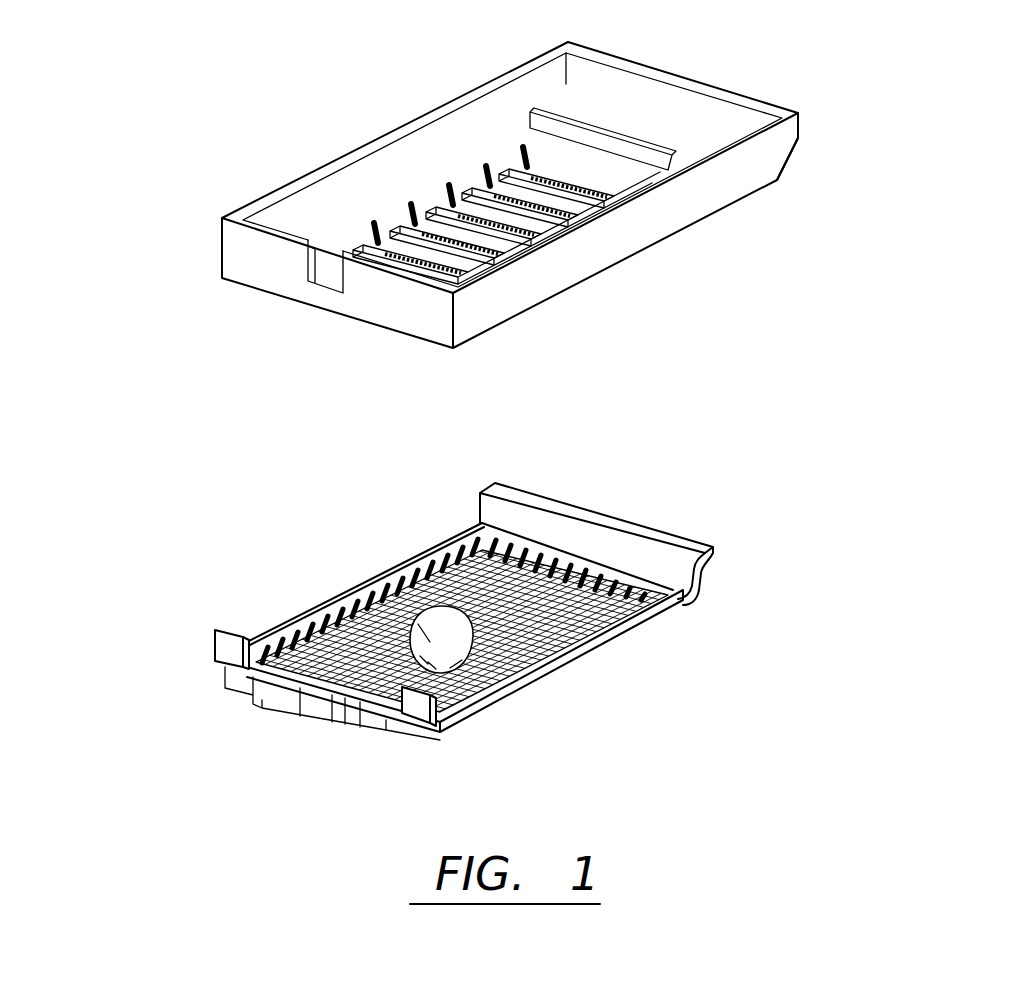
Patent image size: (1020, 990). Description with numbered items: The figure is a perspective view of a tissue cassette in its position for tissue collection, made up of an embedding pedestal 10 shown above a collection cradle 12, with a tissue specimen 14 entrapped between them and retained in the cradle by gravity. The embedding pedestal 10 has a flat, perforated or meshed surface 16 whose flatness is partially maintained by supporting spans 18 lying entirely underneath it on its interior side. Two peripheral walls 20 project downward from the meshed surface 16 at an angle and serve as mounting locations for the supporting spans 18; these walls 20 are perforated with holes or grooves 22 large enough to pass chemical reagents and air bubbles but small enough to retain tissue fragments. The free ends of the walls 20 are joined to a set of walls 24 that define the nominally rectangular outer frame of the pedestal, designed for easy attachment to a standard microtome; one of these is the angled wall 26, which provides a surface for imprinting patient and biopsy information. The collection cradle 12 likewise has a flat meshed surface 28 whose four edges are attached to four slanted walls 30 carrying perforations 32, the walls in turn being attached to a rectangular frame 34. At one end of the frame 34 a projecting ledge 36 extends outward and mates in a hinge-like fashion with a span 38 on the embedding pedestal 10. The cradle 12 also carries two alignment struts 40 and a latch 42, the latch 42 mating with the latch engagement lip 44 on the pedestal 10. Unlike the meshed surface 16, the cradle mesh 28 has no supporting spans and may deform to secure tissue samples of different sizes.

The embedding pedestal 10 is at (138, 27).
The collection cradle 12 is at (142, 440).
The tissue specimen 14 is at (432, 645).
The meshed surface 16 is at (558, 207).
The supporting spans 18 is at (500, 240).
The peripheral walls 20 is at (397, 216).
The holes or grooves 22 is at (413, 215).
The outer frame walls 24 is at (657, 218).
The angled wall 26 is at (790, 160).
The meshed surface 28 is at (535, 630).
The slanted walls 30 is at (600, 592).
The slots 32 is at (548, 553).
The rectangular frame 34 is at (692, 598).
The projecting ledge 36 is at (718, 551).
The span 38 is at (640, 146).
The alignment struts 40 is at (228, 640).
The latch 42 is at (300, 703).
The latch engagement lip 44 is at (332, 285).